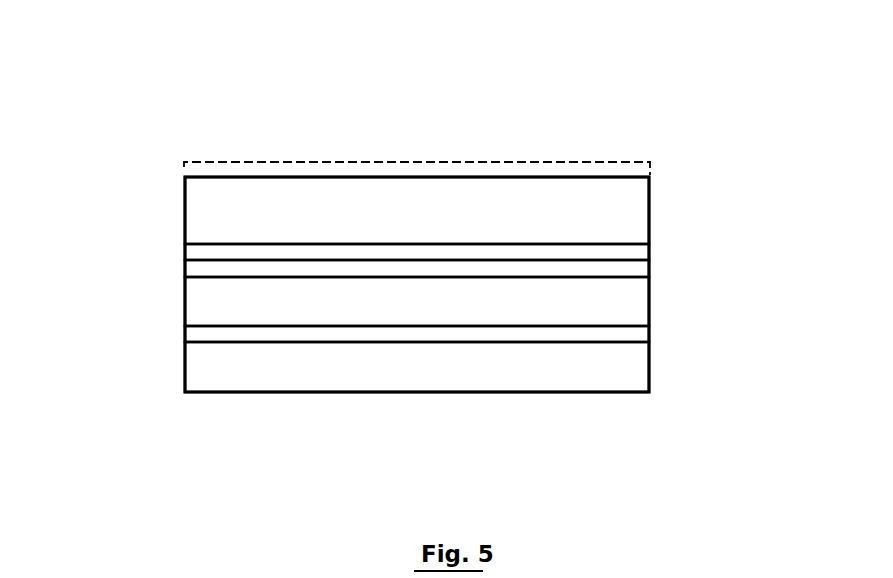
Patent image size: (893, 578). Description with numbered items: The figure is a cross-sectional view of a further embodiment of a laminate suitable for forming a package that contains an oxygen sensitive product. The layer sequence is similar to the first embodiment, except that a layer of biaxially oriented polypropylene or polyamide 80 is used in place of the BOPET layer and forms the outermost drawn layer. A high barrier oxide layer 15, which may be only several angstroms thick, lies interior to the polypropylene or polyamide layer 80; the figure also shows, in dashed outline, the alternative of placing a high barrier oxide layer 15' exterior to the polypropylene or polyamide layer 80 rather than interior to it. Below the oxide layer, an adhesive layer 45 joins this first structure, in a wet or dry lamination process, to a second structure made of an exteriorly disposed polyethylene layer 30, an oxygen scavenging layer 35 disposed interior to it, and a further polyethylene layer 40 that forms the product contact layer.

The layer of biaxially oriented polypropylene or polyamide 80 is at (247, 215).
The high barrier oxide layer 15' is at (417, 97).
The high barrier oxide layer 15 is at (427, 140).
The adhesive layer 45 is at (205, 268).
The polyethylene layer 30 is at (621, 295).
The oxygen scavenging layer 35 is at (222, 333).
The further polyethylene layer 40 is at (548, 381).